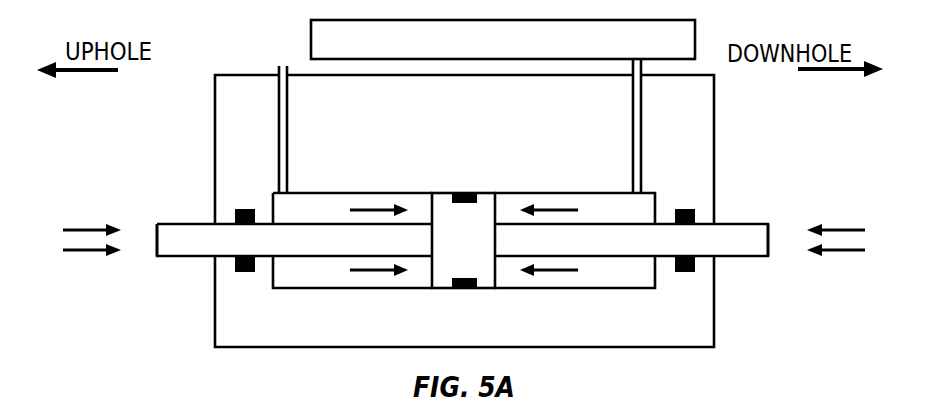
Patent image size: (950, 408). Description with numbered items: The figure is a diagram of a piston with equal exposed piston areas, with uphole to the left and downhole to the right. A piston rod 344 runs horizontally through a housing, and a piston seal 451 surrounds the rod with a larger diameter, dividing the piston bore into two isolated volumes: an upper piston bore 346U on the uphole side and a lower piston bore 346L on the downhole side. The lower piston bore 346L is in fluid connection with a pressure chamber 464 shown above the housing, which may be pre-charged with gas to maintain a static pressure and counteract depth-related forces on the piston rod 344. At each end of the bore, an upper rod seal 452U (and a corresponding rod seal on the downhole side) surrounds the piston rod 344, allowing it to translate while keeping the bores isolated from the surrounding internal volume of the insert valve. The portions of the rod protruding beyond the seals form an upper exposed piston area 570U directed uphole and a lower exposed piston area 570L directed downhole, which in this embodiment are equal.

The pressure chamber 464 is at (641, 55).
The upper rod seal 452U is at (727, 163).
The upper piston bore 346U is at (302, 208).
The lower piston bore 346L is at (605, 212).
The piston rod 344 is at (462, 240).
The piston seal 451 is at (475, 313).
The upper exposed piston area 570U is at (157, 251).
The lower exposed piston area 570L is at (768, 251).